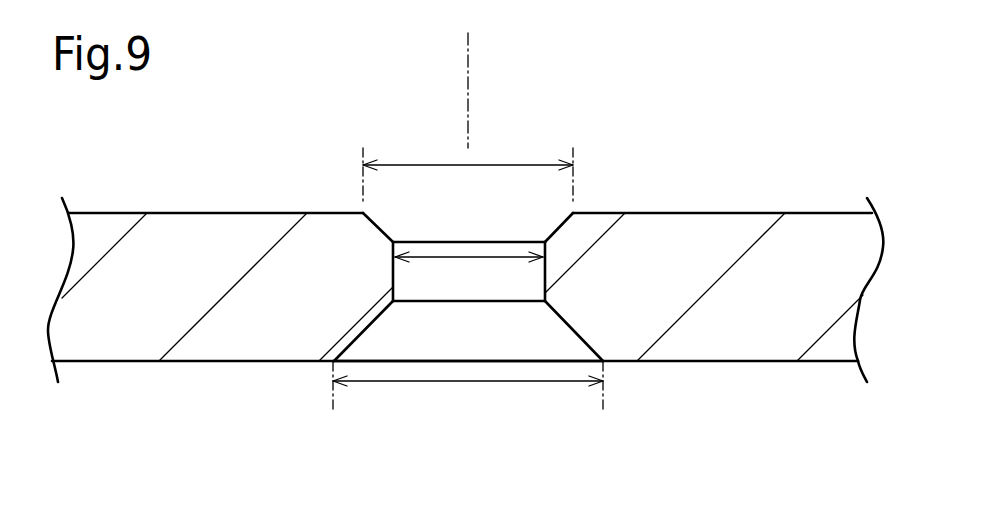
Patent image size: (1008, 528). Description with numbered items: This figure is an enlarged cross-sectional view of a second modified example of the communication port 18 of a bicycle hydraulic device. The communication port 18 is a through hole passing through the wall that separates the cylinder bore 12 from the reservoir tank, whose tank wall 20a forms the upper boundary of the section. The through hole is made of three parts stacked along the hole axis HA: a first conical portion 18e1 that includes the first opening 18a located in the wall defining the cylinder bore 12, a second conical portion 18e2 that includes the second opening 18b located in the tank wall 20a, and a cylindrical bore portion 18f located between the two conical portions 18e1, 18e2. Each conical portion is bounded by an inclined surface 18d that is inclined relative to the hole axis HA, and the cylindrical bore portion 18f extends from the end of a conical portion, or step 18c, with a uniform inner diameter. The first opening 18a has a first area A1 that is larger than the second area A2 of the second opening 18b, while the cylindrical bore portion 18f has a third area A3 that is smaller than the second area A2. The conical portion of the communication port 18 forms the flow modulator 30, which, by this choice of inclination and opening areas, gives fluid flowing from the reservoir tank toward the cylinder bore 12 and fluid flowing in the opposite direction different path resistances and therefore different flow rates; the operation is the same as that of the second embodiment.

The cylinder bore 12 is at (123, 362).
The tank wall 20a is at (112, 210).
The communication port 18 is at (353, 153).
The first opening 18a is at (333, 358).
The second opening 18b is at (363, 212).
The step 18c is at (393, 287).
The inclined surface 18d is at (572, 342).
The first conical portion 18e1 is at (473, 341).
The second conical portion 18e2 is at (498, 203).
The cylindrical bore portion 18f is at (487, 291).
The flow modulator 30 is at (502, 329).
The first area A1 is at (467, 382).
The second area A2 is at (513, 163).
The third area A3 is at (508, 259).
The hole axis HA is at (467, 57).